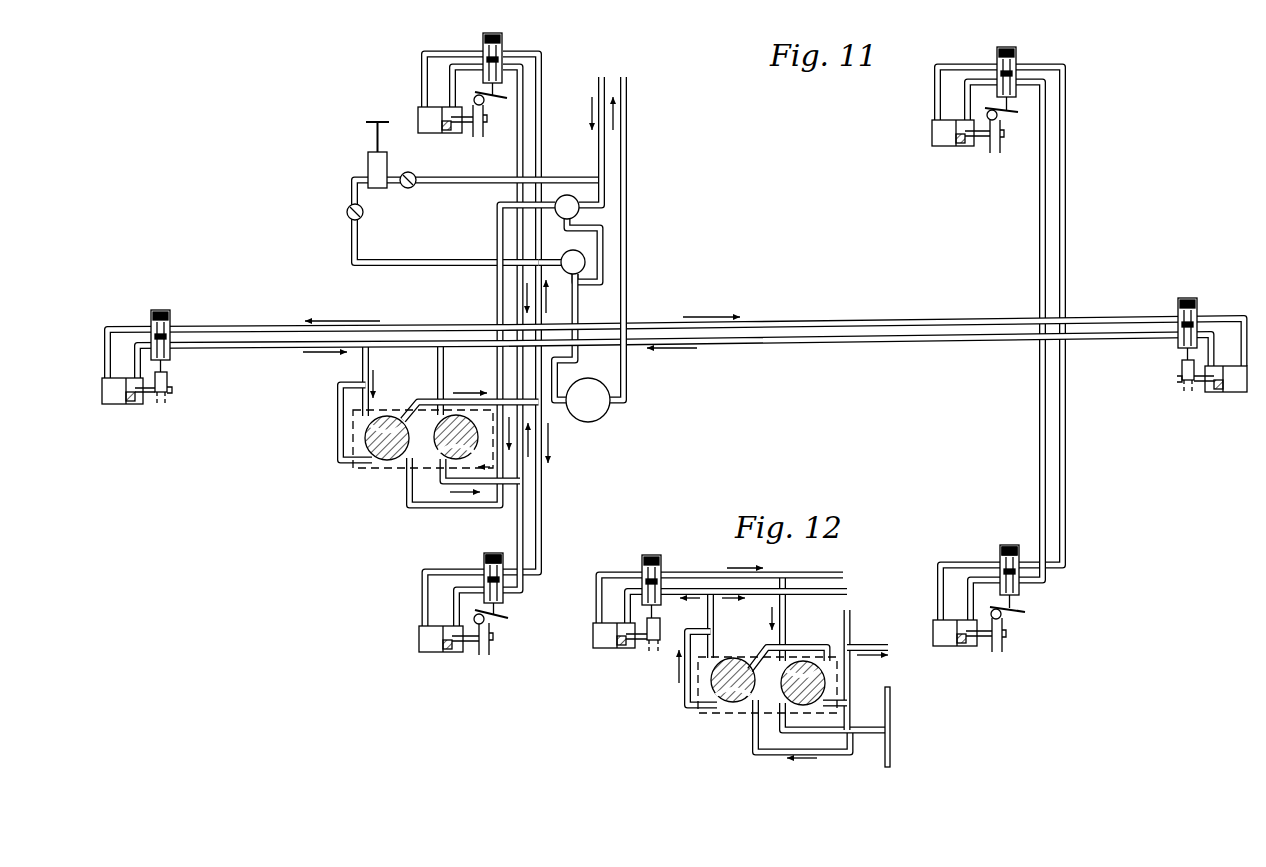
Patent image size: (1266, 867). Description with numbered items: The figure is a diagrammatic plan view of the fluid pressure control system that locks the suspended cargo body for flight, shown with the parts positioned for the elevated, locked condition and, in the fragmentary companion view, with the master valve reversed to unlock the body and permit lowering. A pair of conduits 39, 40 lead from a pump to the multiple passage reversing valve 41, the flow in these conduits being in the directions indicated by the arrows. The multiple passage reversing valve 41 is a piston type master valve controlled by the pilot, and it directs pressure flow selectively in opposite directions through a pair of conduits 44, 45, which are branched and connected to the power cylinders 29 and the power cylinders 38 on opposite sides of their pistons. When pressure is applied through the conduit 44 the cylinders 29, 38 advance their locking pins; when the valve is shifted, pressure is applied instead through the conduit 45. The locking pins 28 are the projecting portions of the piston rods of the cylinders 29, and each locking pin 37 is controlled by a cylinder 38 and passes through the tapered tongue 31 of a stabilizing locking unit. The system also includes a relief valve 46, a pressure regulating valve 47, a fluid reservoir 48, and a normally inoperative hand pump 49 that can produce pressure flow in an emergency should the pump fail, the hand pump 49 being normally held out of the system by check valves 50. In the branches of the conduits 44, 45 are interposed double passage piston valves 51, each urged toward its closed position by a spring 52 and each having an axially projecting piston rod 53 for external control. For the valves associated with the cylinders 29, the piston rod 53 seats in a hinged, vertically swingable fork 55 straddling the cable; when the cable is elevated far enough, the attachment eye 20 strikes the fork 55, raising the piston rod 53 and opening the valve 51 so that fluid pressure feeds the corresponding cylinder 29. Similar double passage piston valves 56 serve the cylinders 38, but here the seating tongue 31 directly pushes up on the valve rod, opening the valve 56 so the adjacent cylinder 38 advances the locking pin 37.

In FIG. 11, the attachment eye 20 is at (481, 138).
In FIG. 11, the locking pin 28 is at (461, 124).
In FIG. 11, the power cylinder 29 is at (424, 136).
In FIG. 11, the tapered tongue 31 is at (169, 378).
In FIG. 12, the tapered tongue 31 is at (661, 632).
In FIG. 11, the locking pin 37 is at (174, 392).
In FIG. 12, the locking pin 37 is at (632, 640).
In FIG. 11, the power cylinder 38 is at (122, 404).
In FIG. 12, the power cylinder 38 is at (597, 648).
In FIG. 11, the conduit 39 is at (606, 160).
In FIG. 11, the conduit 40 is at (628, 127).
In FIG. 11, the multiple passage reversing valve 41 is at (447, 452).
In FIG. 12, the multiple passage reversing valve 41 is at (800, 687).
In FIG. 11, the conduit 44 is at (782, 326).
In FIG. 12, the conduit 44 is at (805, 572).
In FIG. 11, the conduit 45 is at (831, 343).
In FIG. 12, the conduit 45 is at (822, 588).
In FIG. 11, the relief valve 46 is at (580, 208).
In FIG. 11, the pressure regulating valve 47 is at (586, 262).
In FIG. 11, the fluid reservoir 48 is at (603, 410).
In FIG. 11, the hand pump 49 is at (368, 164).
In FIG. 11, the check valve 50 is at (347, 213).
In FIG. 11, the double passage piston valve 51 is at (501, 43).
In FIG. 11, the spring 52 is at (492, 552).
In FIG. 11, the piston rod 53 is at (512, 609).
In FIG. 11, the hinged fork 55 is at (490, 622).
In FIG. 11, the double passage piston valve 56 is at (172, 316).
In FIG. 12, the double passage piston valve 56 is at (664, 572).